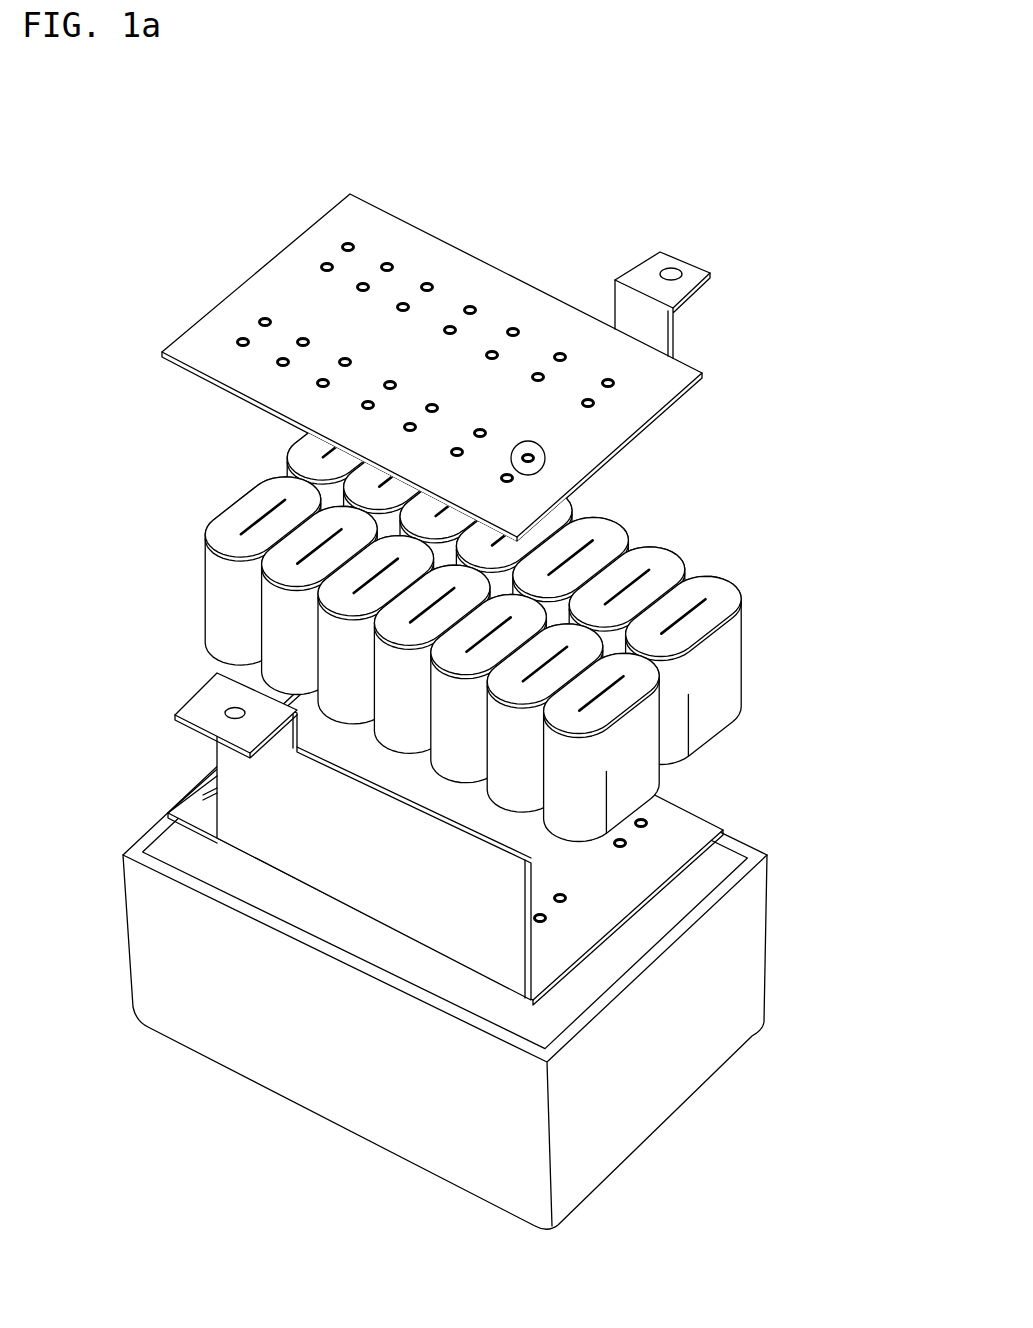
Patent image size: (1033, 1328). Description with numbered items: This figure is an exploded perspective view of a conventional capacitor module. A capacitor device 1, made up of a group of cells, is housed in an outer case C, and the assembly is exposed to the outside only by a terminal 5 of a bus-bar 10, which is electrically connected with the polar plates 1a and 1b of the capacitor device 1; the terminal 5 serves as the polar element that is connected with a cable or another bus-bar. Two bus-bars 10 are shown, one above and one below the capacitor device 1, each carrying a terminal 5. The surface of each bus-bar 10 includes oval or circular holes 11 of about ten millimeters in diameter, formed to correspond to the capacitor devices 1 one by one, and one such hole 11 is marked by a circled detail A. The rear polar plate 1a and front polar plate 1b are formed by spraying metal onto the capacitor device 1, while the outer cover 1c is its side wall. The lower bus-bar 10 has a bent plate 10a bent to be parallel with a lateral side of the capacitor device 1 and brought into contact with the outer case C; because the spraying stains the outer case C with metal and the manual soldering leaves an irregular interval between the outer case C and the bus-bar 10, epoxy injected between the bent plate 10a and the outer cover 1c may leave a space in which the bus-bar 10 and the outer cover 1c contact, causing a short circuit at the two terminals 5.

The capacitor device 1 is at (614, 540).
The rear polar plate 1a is at (233, 520).
The front polar plate 1b is at (715, 742).
The outer cover 1c is at (220, 611).
The terminal 5 is at (698, 275).
The bus-bar 10 is at (428, 240).
The bent plate 10a is at (283, 855).
The hole 11 is at (262, 320).
The detail A is at (543, 447).
The outer case C is at (413, 1078).